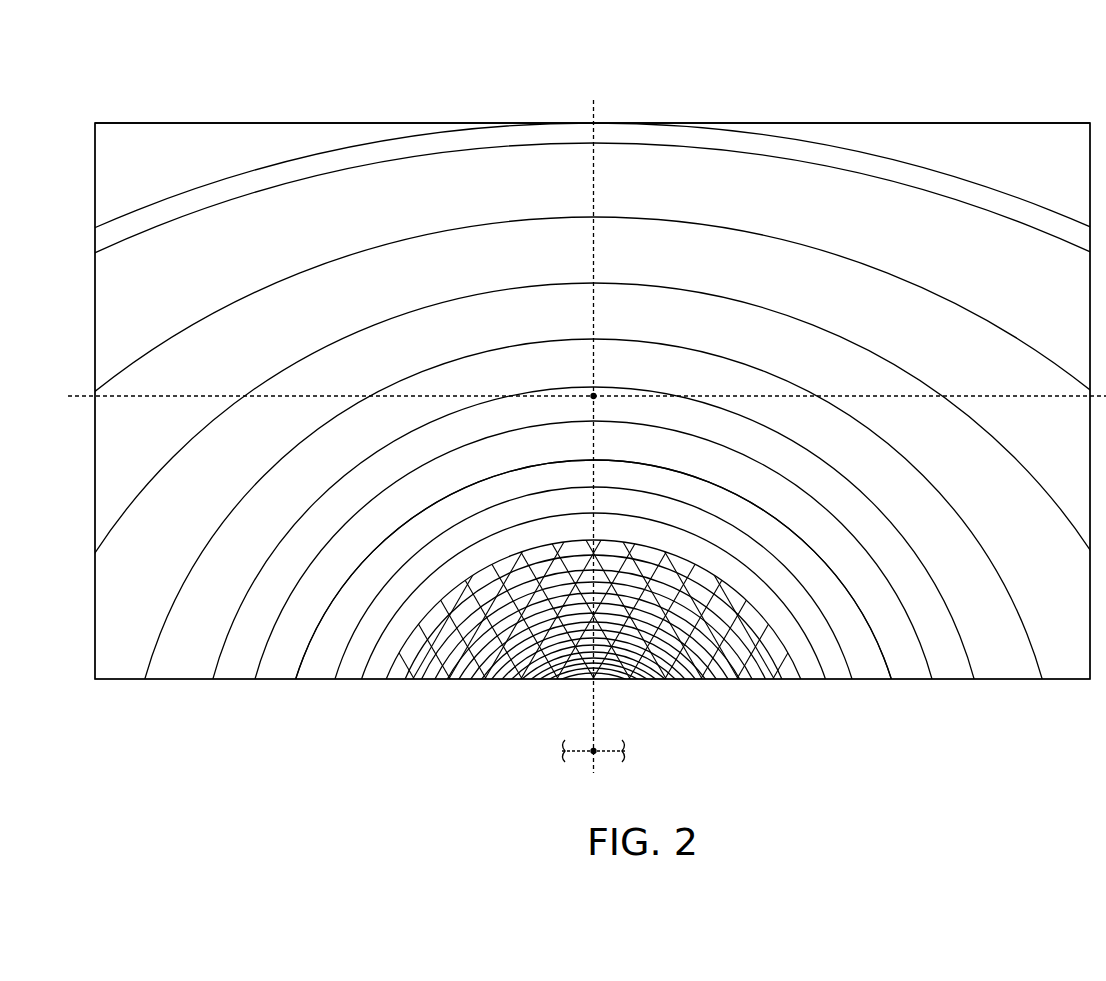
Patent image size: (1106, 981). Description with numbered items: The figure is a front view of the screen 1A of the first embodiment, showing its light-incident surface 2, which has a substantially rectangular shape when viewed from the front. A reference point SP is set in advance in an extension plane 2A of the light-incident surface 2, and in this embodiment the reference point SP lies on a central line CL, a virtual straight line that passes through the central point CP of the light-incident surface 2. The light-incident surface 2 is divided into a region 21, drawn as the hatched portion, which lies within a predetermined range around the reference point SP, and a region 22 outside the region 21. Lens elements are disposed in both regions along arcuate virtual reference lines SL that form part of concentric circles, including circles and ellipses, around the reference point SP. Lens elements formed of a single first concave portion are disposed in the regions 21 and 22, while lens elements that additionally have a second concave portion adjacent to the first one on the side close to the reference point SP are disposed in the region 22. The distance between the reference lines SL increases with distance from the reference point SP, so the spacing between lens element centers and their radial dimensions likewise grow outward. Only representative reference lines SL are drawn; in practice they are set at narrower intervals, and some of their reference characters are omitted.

The light-incident surface 2 is at (957, 130).
The screen 1A is at (1030, 121).
The extension plane 2A is at (285, 739).
The central line CL is at (600, 126).
The central point CP is at (597, 393).
The reference lines SL is at (985, 206).
The region 21 is at (769, 673).
The region 22 is at (905, 673).
The reference point SP is at (595, 752).